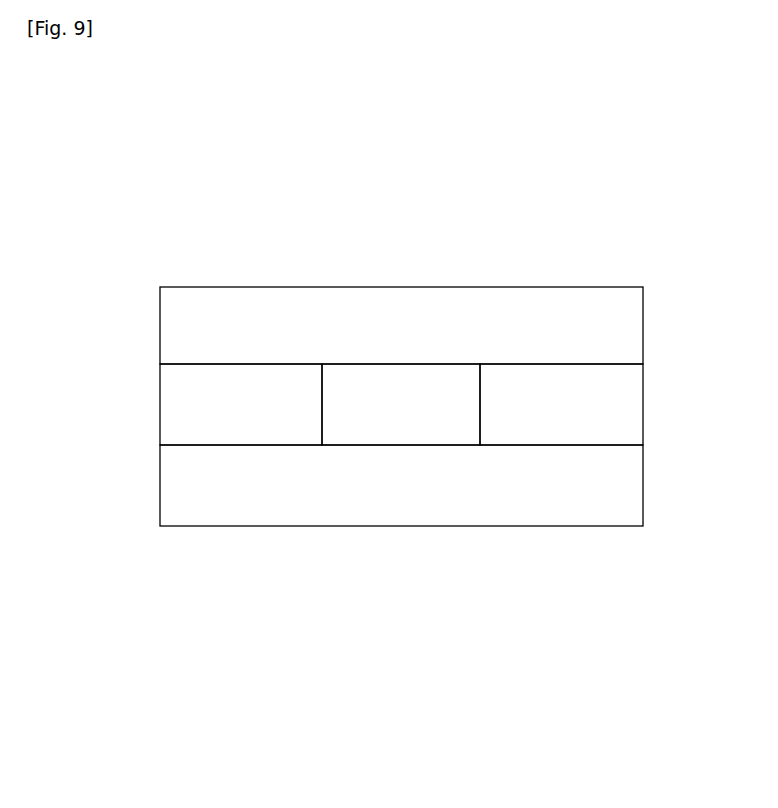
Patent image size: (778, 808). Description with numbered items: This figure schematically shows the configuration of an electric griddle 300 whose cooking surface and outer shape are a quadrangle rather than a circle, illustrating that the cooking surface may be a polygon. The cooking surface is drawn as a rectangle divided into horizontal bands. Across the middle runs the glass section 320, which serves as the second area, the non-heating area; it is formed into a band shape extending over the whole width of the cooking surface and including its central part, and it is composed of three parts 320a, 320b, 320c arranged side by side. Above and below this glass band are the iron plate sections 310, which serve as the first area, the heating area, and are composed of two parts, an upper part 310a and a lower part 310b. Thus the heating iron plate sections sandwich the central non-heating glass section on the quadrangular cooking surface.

The electric griddle 300 is at (402, 110).
The iron plate sections 310 is at (378, 465).
The upper iron plate section part 310a is at (201, 298).
The lower iron plate section part 310b is at (296, 511).
The glass section 320 is at (401, 466).
The first glass section part 320a is at (247, 398).
The second glass section part 320b is at (357, 397).
The third glass section part 320c is at (496, 393).